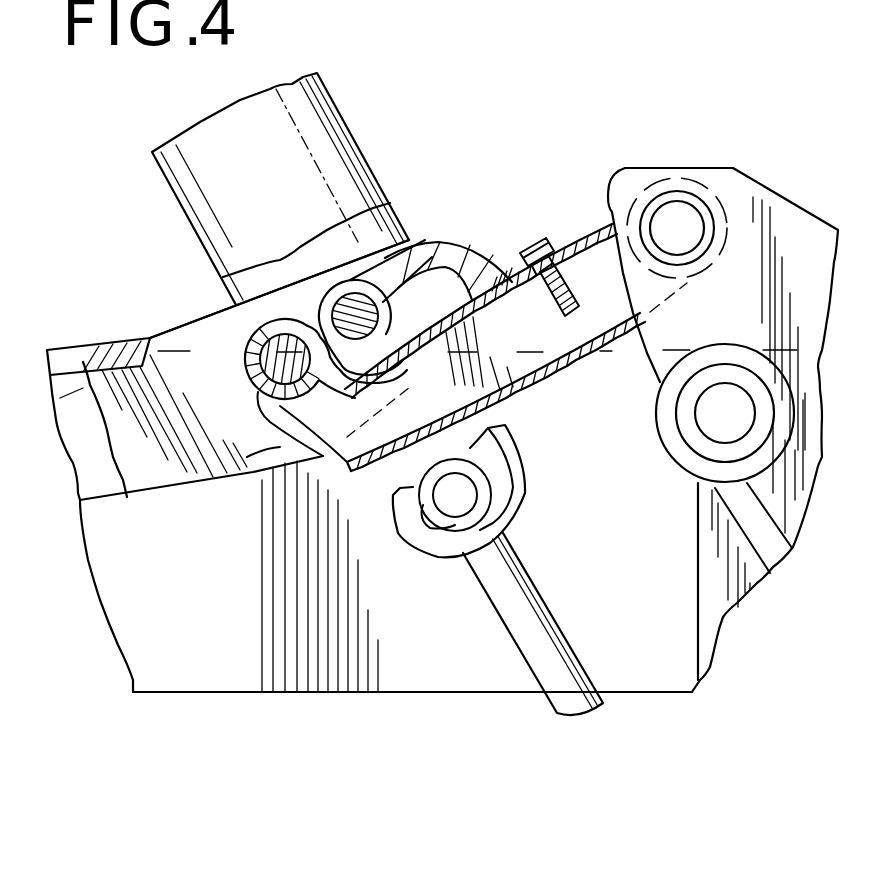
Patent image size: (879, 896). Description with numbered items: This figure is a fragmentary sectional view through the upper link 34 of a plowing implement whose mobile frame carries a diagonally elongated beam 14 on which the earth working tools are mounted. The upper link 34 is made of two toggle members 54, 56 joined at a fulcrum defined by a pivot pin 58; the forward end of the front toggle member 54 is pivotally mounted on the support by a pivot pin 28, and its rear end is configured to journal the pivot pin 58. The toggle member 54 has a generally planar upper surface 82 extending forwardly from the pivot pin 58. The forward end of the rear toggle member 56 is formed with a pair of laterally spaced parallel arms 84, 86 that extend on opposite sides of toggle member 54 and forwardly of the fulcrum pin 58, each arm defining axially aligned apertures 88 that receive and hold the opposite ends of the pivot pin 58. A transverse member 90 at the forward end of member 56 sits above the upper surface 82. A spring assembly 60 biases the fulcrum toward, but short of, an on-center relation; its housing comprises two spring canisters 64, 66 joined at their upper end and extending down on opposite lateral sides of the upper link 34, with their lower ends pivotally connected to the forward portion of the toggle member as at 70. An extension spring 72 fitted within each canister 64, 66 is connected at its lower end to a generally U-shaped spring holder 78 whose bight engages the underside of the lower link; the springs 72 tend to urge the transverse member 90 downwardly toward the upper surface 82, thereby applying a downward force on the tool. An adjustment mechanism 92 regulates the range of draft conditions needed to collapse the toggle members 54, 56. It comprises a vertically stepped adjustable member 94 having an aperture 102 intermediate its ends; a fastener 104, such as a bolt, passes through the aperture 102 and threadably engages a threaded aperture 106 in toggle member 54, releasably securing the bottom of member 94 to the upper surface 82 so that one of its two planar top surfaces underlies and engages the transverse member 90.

The beam 14 is at (170, 676).
The pivot pin 28 is at (683, 217).
The upper link 34 is at (114, 507).
The toggle member 54 is at (595, 366).
The toggle member 56 is at (178, 322).
The pivot pin 58 is at (262, 376).
The spring assembly 60 is at (301, 194).
The spring canister 64 is at (320, 114).
The spring canister 66 is at (380, 217).
The pivotal connection 70 is at (393, 304).
The extension spring 72 is at (507, 507).
The spring holder 78 is at (590, 655).
The upper surface 82 is at (628, 168).
The arm 84 is at (254, 460).
The arm 86 is at (78, 500).
The aperture 88 is at (240, 353).
The transverse member 90 is at (453, 245).
The adjustment mechanism 92 is at (557, 260).
The adjustable member 94 is at (512, 310).
The aperture 102 is at (563, 280).
The fastener 104 is at (550, 248).
The threaded aperture 106 is at (557, 282).